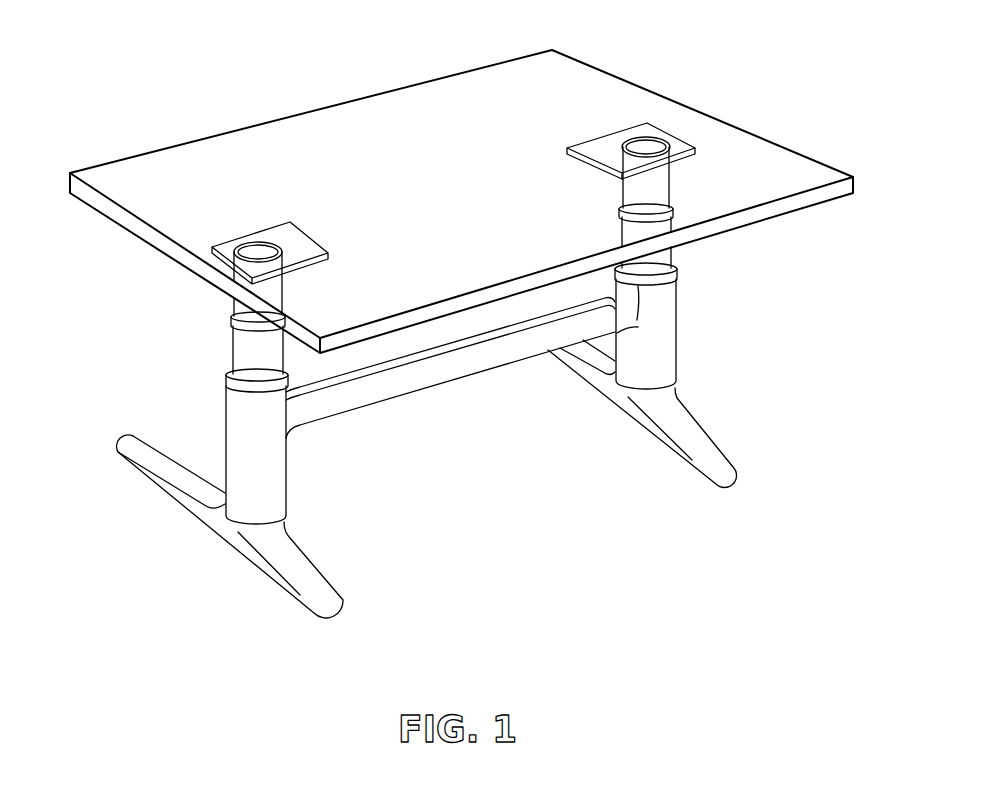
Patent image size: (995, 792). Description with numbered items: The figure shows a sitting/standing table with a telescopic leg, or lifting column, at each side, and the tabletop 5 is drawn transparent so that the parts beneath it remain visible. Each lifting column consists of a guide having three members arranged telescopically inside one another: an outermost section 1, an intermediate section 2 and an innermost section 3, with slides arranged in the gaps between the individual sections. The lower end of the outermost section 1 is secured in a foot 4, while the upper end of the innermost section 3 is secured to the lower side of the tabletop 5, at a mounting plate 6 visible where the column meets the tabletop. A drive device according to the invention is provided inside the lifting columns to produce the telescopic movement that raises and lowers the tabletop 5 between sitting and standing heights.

The outermost section 1 is at (243, 413).
The intermediate section 2 is at (231, 350).
The innermost section 3 is at (233, 305).
The foot 4 is at (305, 581).
The tabletop 5 is at (388, 125).
The mounting plate 6 is at (618, 140).